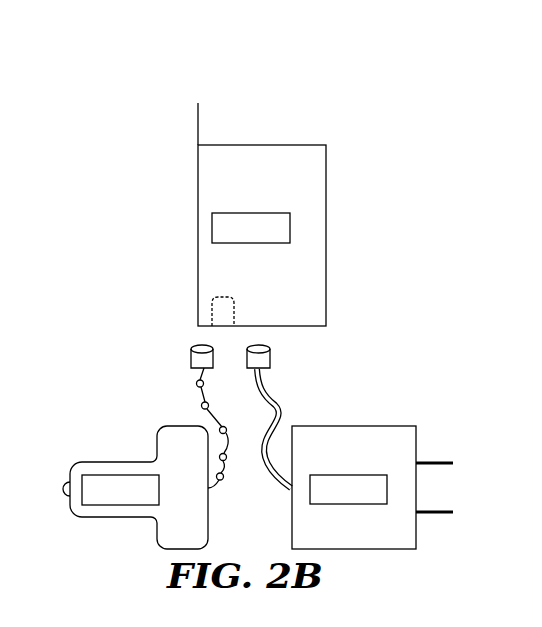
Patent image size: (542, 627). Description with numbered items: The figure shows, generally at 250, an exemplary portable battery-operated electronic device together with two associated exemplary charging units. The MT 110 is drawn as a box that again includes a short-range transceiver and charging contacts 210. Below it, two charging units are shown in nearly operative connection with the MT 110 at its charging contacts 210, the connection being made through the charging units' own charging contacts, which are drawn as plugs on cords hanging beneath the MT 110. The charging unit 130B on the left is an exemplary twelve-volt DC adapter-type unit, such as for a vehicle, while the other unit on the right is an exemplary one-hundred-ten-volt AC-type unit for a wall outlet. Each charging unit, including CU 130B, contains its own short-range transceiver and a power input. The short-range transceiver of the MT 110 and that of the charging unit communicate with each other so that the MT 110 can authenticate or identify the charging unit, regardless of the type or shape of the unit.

The portable battery-operated electronic device and associated charging units 250 is at (139, 97).
The MT 110 is at (198, 160).
The charging contact 210 is at (212, 312).
The CU 130B is at (93, 517).